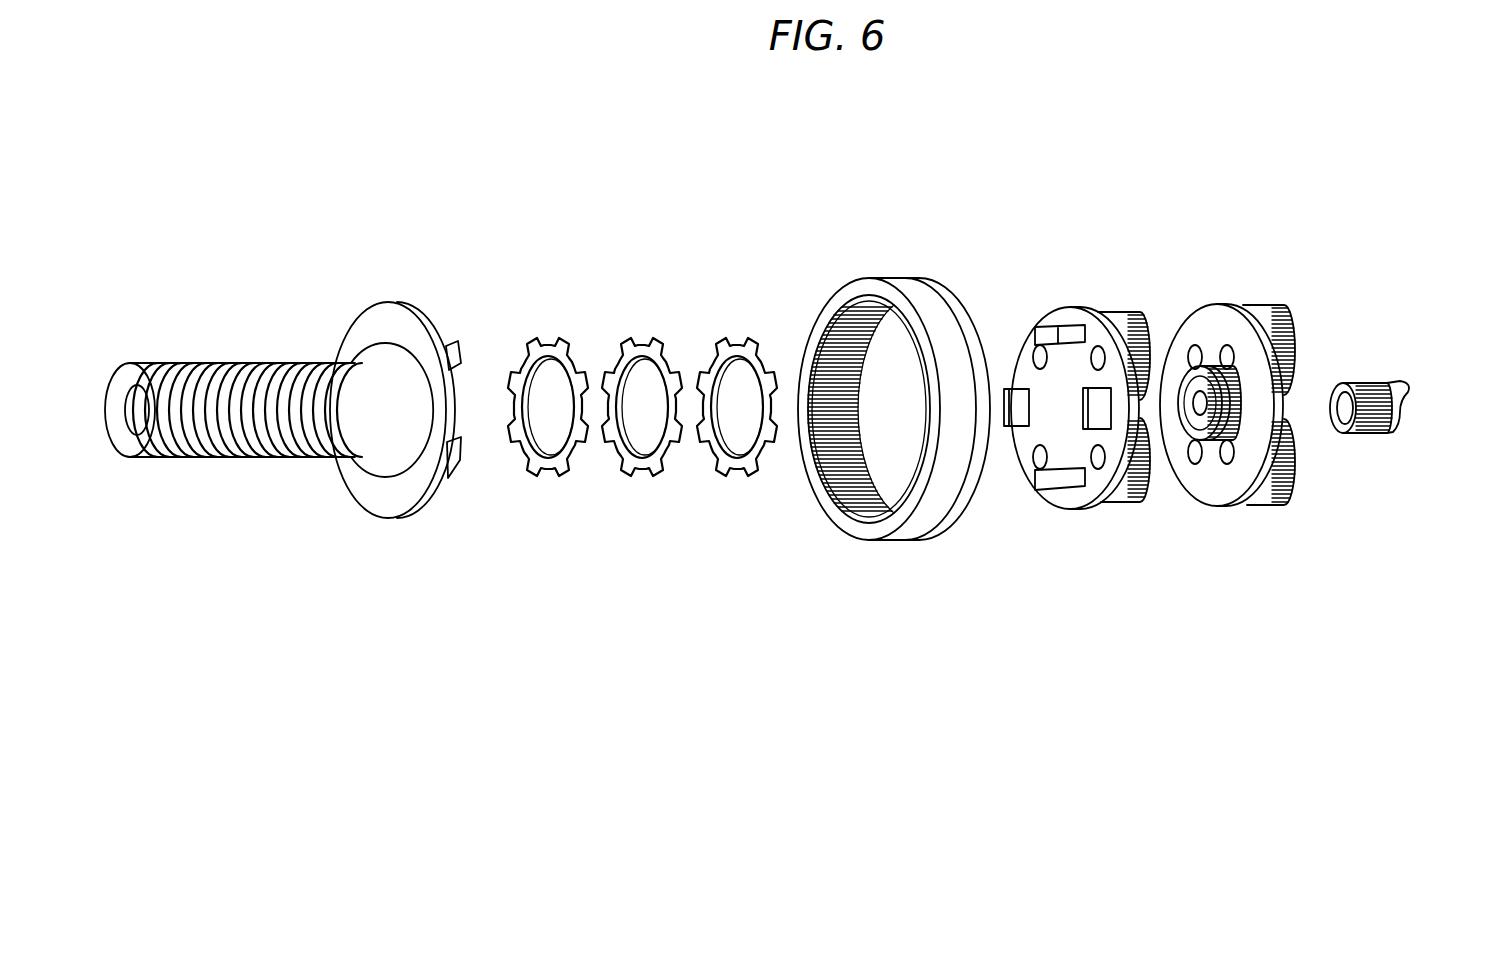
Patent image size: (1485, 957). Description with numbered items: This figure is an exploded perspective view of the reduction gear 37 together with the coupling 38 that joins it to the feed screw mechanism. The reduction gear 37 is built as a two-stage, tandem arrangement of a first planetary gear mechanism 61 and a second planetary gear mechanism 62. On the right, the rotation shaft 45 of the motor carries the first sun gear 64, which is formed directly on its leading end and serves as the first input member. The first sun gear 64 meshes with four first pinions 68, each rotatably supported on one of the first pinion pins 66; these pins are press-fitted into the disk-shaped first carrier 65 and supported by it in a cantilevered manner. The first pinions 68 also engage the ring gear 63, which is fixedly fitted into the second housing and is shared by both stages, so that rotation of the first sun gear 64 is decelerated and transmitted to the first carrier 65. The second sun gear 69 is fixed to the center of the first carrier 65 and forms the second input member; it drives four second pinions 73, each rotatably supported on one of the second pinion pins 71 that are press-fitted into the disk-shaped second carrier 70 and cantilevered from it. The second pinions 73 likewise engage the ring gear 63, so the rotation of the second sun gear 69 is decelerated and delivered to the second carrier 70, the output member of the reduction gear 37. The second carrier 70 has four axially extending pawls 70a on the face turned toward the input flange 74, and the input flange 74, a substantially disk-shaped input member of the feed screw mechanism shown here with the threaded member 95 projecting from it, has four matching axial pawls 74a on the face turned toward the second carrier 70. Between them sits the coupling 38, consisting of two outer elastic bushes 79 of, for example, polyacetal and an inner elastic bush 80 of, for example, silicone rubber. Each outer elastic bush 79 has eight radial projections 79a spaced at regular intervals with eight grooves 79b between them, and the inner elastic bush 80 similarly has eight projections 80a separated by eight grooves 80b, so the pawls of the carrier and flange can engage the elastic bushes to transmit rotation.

The threaded shaft 95 is at (265, 368).
The input flange 74 is at (368, 300).
The pawls 74a is at (467, 352).
The outer elastic bushes 79 is at (552, 310).
The projections 79a is at (512, 345).
The grooves 79b is at (588, 350).
The inner elastic bush 80 is at (641, 290).
The projections 80a is at (638, 330).
The grooves 80b is at (665, 366).
The coupling 38 is at (686, 233).
The ring gear 63 is at (905, 290).
The second carrier 70 is at (1064, 301).
The pawls 70a is at (1040, 325).
The second pinion pins 71 is at (1035, 350).
The reduction gear 37 is at (1132, 212).
The second planetary gear mechanism 62 is at (1139, 279).
The second pinions 73 is at (1148, 332).
The first pinion pins 66 is at (1228, 345).
The first pinions 68 is at (1283, 305).
The first carrier 65 is at (1225, 487).
The second sun gear 69 is at (1222, 403).
The first planetary gear mechanism 61 is at (1322, 321).
The first sun gear 64 is at (1358, 386).
The rotation shaft 45 is at (1398, 385).